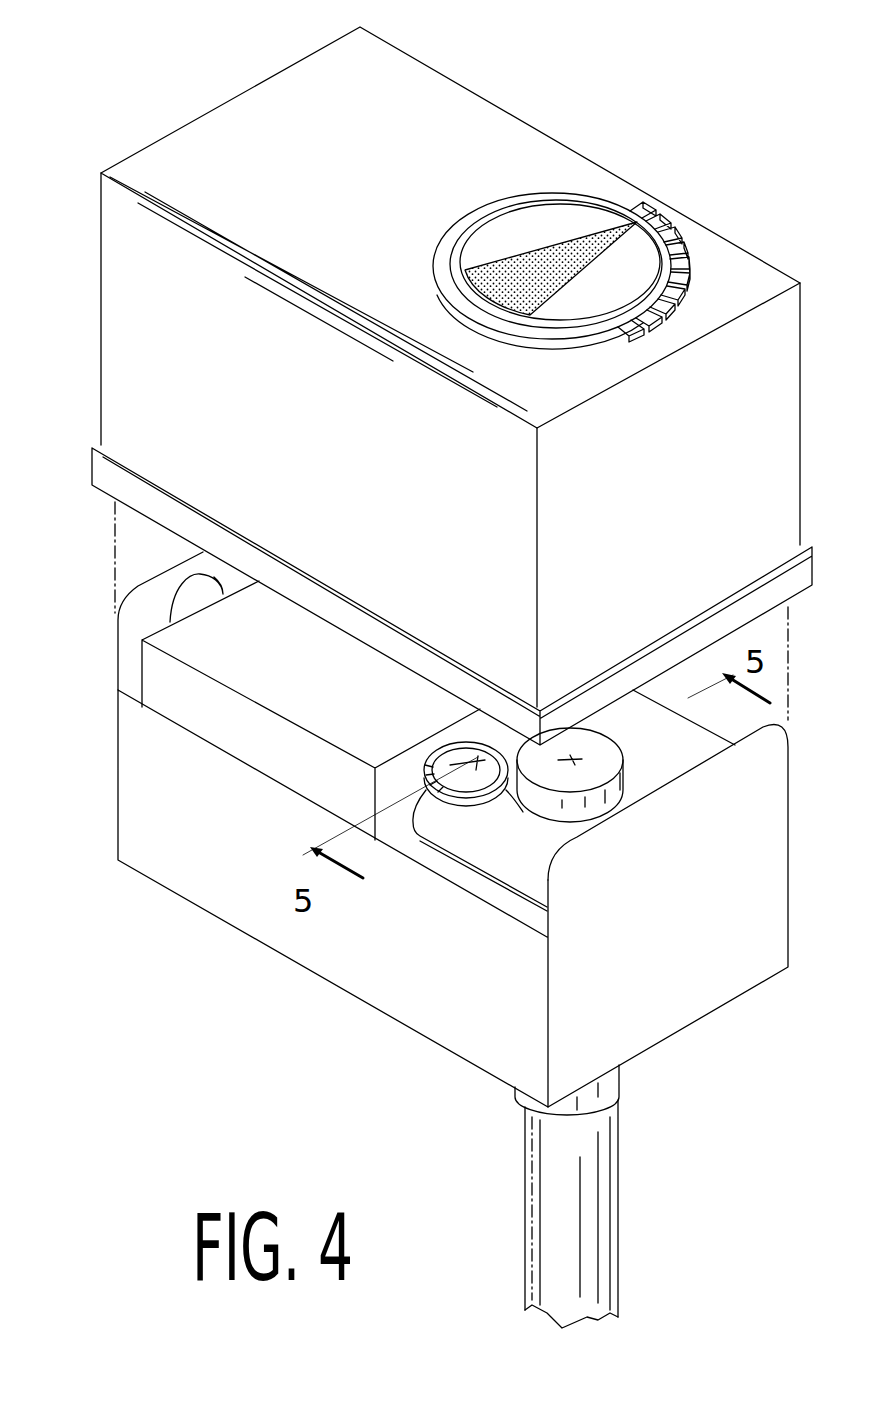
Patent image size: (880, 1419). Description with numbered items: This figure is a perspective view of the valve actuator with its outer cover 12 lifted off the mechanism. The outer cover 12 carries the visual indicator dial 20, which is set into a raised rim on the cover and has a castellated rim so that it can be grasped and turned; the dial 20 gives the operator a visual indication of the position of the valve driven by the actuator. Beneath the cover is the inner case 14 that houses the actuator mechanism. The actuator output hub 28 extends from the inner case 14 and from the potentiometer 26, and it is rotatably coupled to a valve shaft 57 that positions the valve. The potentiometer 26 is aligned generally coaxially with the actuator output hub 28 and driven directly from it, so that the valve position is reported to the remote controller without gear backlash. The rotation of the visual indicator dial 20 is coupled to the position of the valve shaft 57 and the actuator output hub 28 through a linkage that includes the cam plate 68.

The outer cover 12 is at (107, 308).
The inner case 14 is at (138, 777).
The visual indicator dial 20 is at (503, 230).
The potentiometer 26 is at (600, 752).
The actuator output hub 28 is at (585, 1093).
The valve shaft 57 is at (562, 1173).
The cam plate 68 is at (485, 785).